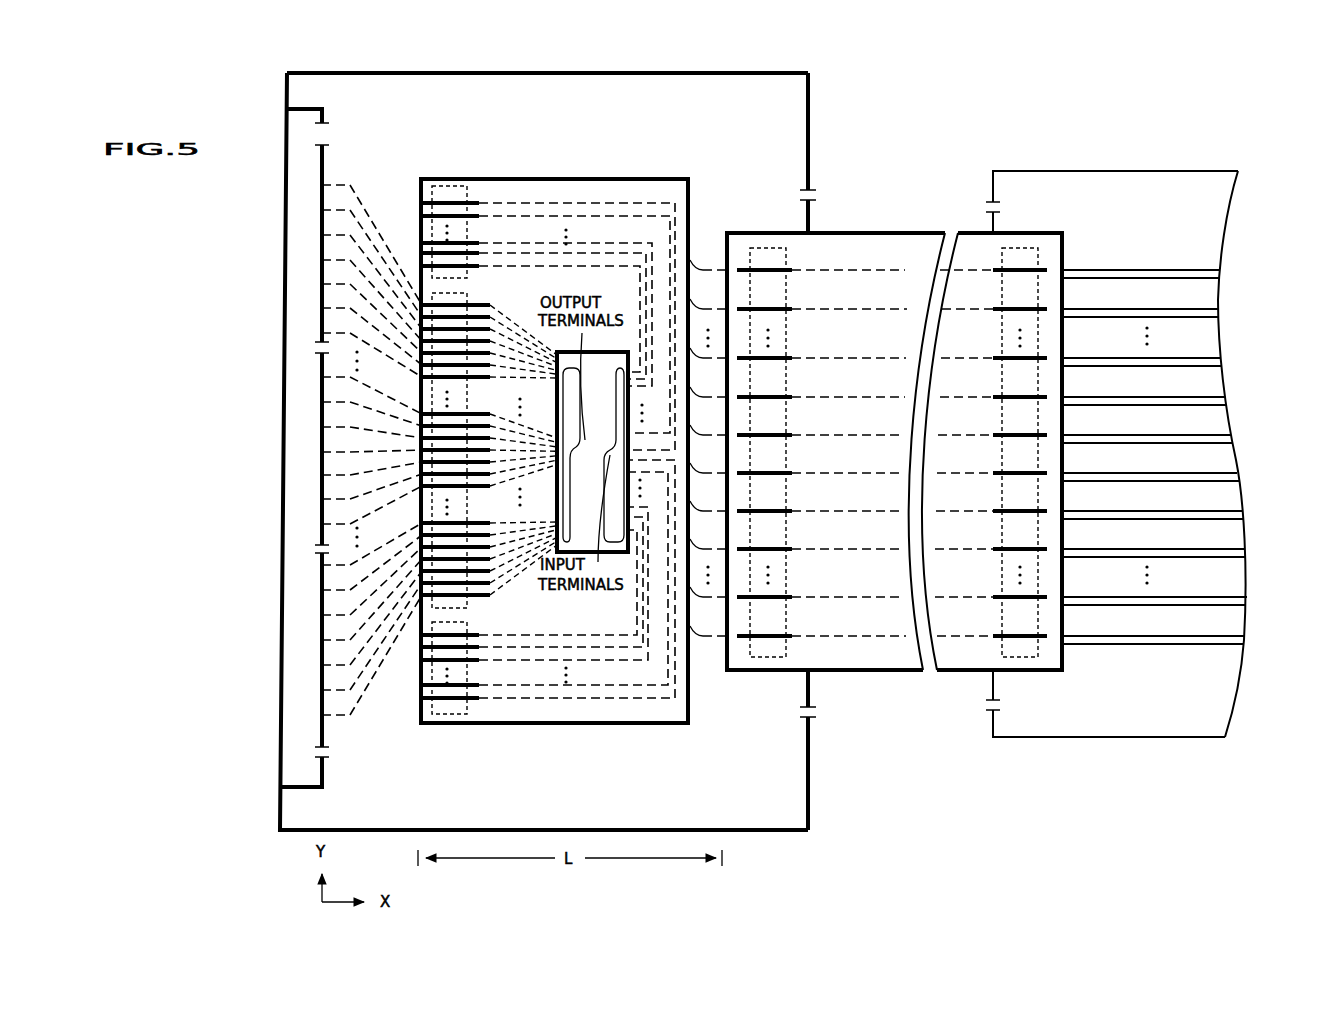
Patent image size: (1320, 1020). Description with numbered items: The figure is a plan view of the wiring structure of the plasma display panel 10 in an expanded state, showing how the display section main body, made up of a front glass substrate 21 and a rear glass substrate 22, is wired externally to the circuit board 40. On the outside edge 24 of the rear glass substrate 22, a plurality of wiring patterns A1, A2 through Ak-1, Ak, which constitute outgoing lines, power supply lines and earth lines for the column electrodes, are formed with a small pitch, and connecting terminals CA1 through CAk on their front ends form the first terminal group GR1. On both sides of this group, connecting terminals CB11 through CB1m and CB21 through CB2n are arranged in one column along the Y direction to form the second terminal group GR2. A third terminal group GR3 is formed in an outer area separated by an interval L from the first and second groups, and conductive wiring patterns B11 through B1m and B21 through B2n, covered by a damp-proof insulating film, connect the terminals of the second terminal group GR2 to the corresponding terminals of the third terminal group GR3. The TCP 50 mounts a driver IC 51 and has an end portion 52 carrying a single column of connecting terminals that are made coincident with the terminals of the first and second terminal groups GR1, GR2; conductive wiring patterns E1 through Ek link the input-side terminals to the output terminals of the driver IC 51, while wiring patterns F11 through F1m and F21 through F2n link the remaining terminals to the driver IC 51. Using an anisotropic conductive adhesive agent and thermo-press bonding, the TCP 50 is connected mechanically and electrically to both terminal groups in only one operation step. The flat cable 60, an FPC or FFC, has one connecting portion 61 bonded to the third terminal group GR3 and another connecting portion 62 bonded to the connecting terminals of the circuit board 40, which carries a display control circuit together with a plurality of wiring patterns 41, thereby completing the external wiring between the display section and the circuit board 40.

The plasma display panel 10 is at (410, 68).
The rear glass substrate 22 is at (515, 73).
The outside edge 24 is at (675, 96).
The front glass substrate 21 is at (324, 124).
The wiring pattern A1 is at (357, 186).
The wiring pattern A2 is at (360, 214).
The wiring pattern Ak-1 is at (355, 691).
The wiring pattern Ak is at (353, 717).
The first terminal group GR1 is at (414, 395).
The second terminal group GR2 is at (372, 458).
The third terminal group GR3 is at (770, 229).
The TCP 50 is at (572, 179).
The driver IC 51 is at (593, 354).
The end portion 52 is at (470, 176).
The connecting terminal CB11 is at (460, 203).
The connecting terminal CB1m is at (455, 268).
The connecting terminal CA1 is at (455, 305).
The connecting terminal CAk is at (455, 600).
The connecting terminal CB21 is at (455, 636).
The connecting terminal CB2n is at (455, 699).
The wiring pattern E1 is at (513, 326).
The wiring pattern Ek is at (512, 587).
The wiring pattern F11 is at (636, 203).
The wiring pattern F1m is at (568, 268).
The wiring pattern F21 is at (565, 635).
The wiring pattern F2n is at (632, 700).
The wiring pattern B11 is at (706, 266).
The wiring pattern B1m is at (706, 433).
The wiring pattern B21 is at (706, 473).
The wiring pattern B2n is at (707, 638).
The flat cable 60 is at (893, 233).
The connecting portion 61 is at (797, 678).
The connecting portion 62 is at (1062, 678).
The circuit board 40 is at (1150, 171).
The wiring patterns 41 is at (1222, 364).